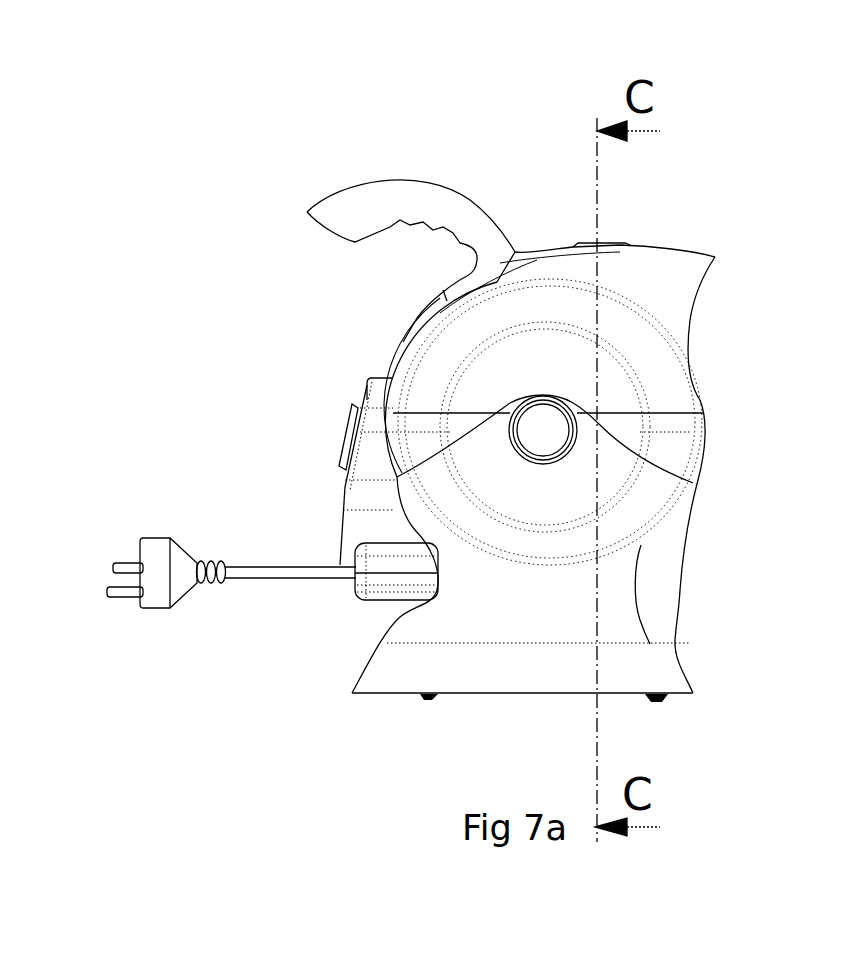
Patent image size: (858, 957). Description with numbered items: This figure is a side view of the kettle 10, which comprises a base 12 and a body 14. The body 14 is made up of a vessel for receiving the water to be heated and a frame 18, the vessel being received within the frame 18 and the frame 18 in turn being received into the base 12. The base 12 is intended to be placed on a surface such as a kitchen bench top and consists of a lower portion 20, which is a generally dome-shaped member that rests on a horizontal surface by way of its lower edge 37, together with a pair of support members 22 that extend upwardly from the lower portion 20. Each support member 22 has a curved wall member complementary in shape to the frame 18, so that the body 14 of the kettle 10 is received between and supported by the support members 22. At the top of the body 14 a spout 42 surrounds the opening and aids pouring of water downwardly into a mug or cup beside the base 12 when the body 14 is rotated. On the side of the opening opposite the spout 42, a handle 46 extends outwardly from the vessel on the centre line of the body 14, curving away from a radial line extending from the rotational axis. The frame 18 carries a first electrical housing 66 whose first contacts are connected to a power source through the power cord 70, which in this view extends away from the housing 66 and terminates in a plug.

The kettle 10 is at (310, 330).
The base 12 is at (695, 580).
The body 14 is at (723, 367).
The frame 18 is at (657, 458).
The lower portion 20 is at (612, 677).
The support members 22 is at (650, 493).
The lower edge 37 is at (467, 693).
The spout 42 is at (717, 257).
The handle 46 is at (375, 205).
The first electrical housing 66 is at (375, 595).
The power cord 70 is at (177, 557).